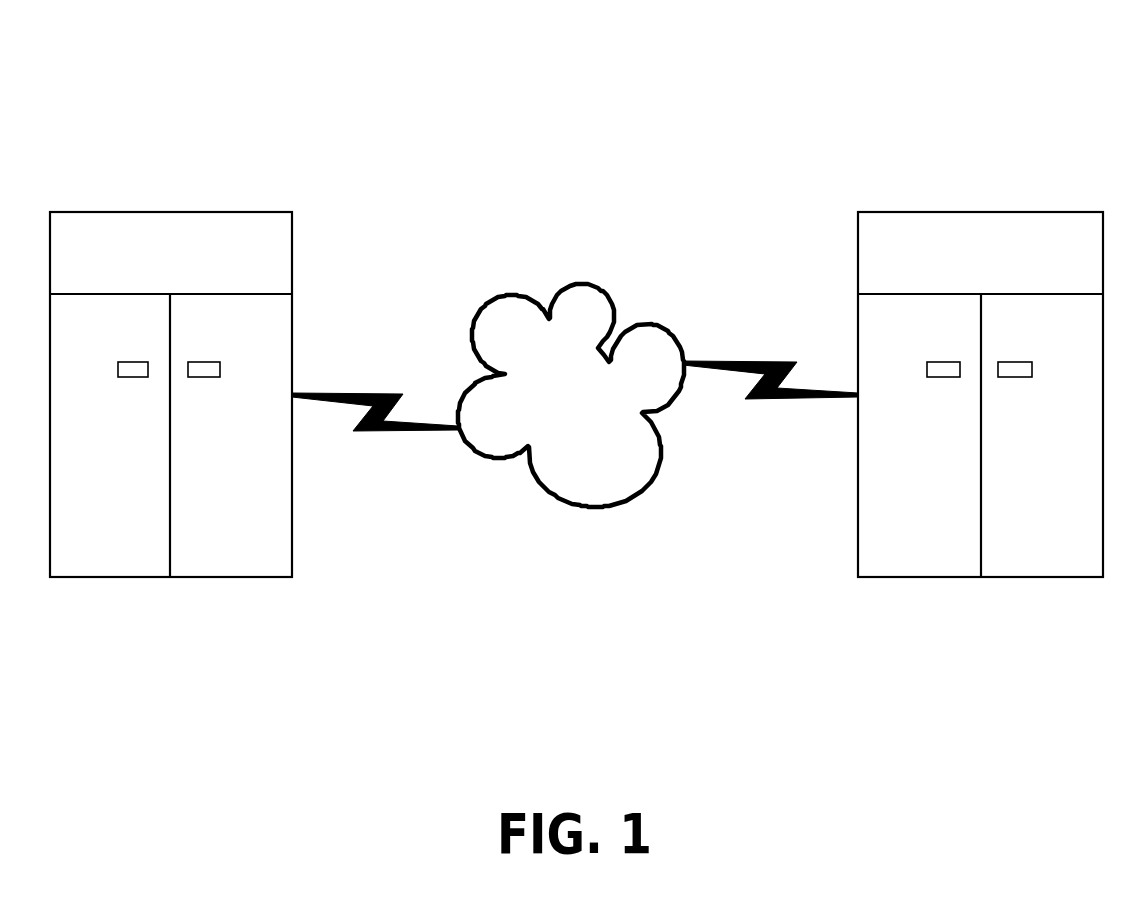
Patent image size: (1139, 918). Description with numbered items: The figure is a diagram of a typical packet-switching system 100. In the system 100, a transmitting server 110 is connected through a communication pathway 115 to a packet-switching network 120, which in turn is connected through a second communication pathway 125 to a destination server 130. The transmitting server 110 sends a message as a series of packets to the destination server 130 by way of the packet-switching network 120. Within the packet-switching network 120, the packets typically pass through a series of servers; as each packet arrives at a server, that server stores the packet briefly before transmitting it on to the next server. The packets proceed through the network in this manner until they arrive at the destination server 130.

The packet-switching system 100 is at (587, 75).
The transmitting server 110 is at (142, 212).
The communication pathway 115 is at (385, 432).
The packet-switching network 120 is at (578, 284).
The communication pathway 125 is at (765, 401).
The destination server 130 is at (982, 212).